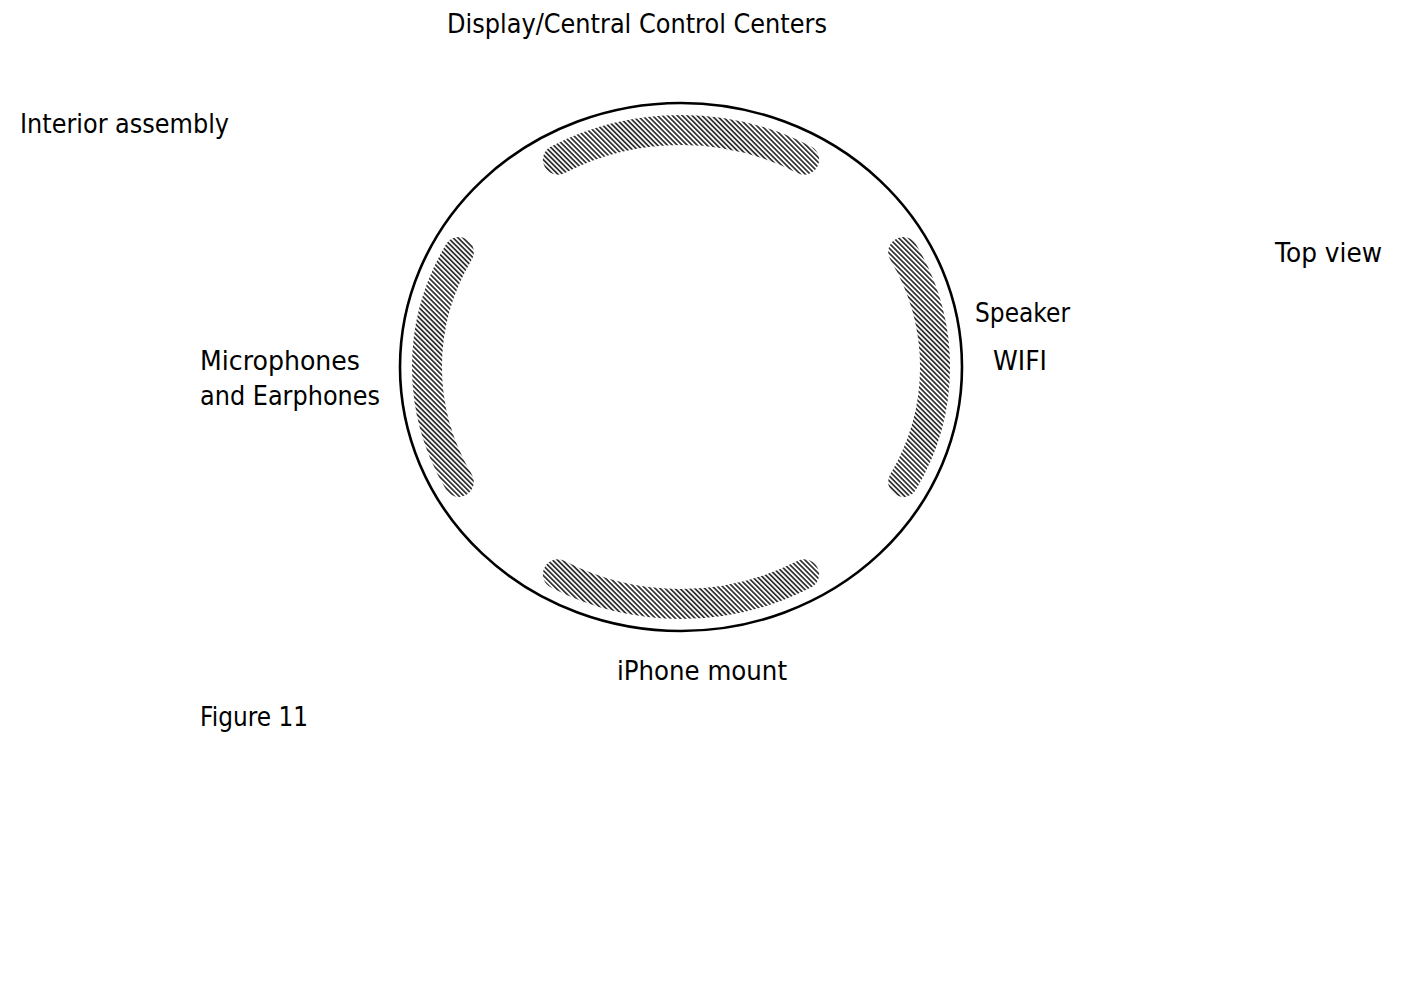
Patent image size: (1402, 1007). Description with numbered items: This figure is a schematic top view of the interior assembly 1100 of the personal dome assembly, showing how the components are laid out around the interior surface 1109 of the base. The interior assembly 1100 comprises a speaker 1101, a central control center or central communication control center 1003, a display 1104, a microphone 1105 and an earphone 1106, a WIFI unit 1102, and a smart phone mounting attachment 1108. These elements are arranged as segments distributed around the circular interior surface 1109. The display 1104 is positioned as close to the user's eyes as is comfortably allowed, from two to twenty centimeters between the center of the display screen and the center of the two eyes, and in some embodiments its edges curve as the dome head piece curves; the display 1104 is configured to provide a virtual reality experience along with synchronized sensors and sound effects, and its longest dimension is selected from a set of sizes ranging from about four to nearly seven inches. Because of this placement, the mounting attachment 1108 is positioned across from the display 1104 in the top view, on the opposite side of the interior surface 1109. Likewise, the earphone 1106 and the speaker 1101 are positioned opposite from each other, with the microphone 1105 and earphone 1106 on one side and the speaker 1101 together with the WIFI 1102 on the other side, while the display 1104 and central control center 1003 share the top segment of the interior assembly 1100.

The interior assembly 1100 is at (829, 343).
The interior surface 1109 is at (860, 170).
The display 1104 is at (671, 103).
The central control center 1003 is at (770, 125).
The microphone 1105 is at (331, 353).
The earphone 1106 is at (445, 478).
The speaker 1101 is at (1025, 342).
The WIFI 1102 is at (918, 487).
The mount adapter for a smart phone 1108 is at (645, 598).